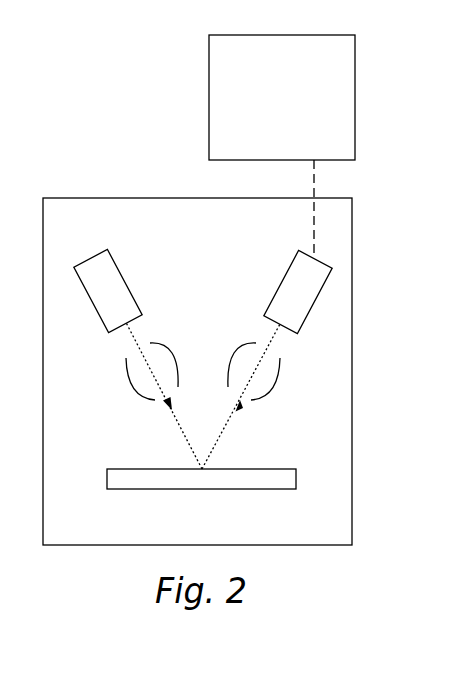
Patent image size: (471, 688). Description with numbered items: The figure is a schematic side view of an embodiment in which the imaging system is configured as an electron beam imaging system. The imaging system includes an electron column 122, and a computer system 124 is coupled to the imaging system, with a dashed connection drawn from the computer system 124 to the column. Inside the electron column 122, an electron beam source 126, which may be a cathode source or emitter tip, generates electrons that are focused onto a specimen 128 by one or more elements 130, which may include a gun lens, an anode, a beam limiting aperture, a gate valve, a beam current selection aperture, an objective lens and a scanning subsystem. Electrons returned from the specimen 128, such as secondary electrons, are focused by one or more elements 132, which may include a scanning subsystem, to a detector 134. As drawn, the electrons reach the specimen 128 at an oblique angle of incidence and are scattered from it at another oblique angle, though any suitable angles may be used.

The electron column 122 is at (353, 297).
The computer system 124 is at (302, 138).
The electron beam source 126 is at (112, 262).
The specimen 128 is at (247, 470).
The elements 130 is at (136, 393).
The elements 132 is at (270, 393).
The detector 134 is at (292, 265).